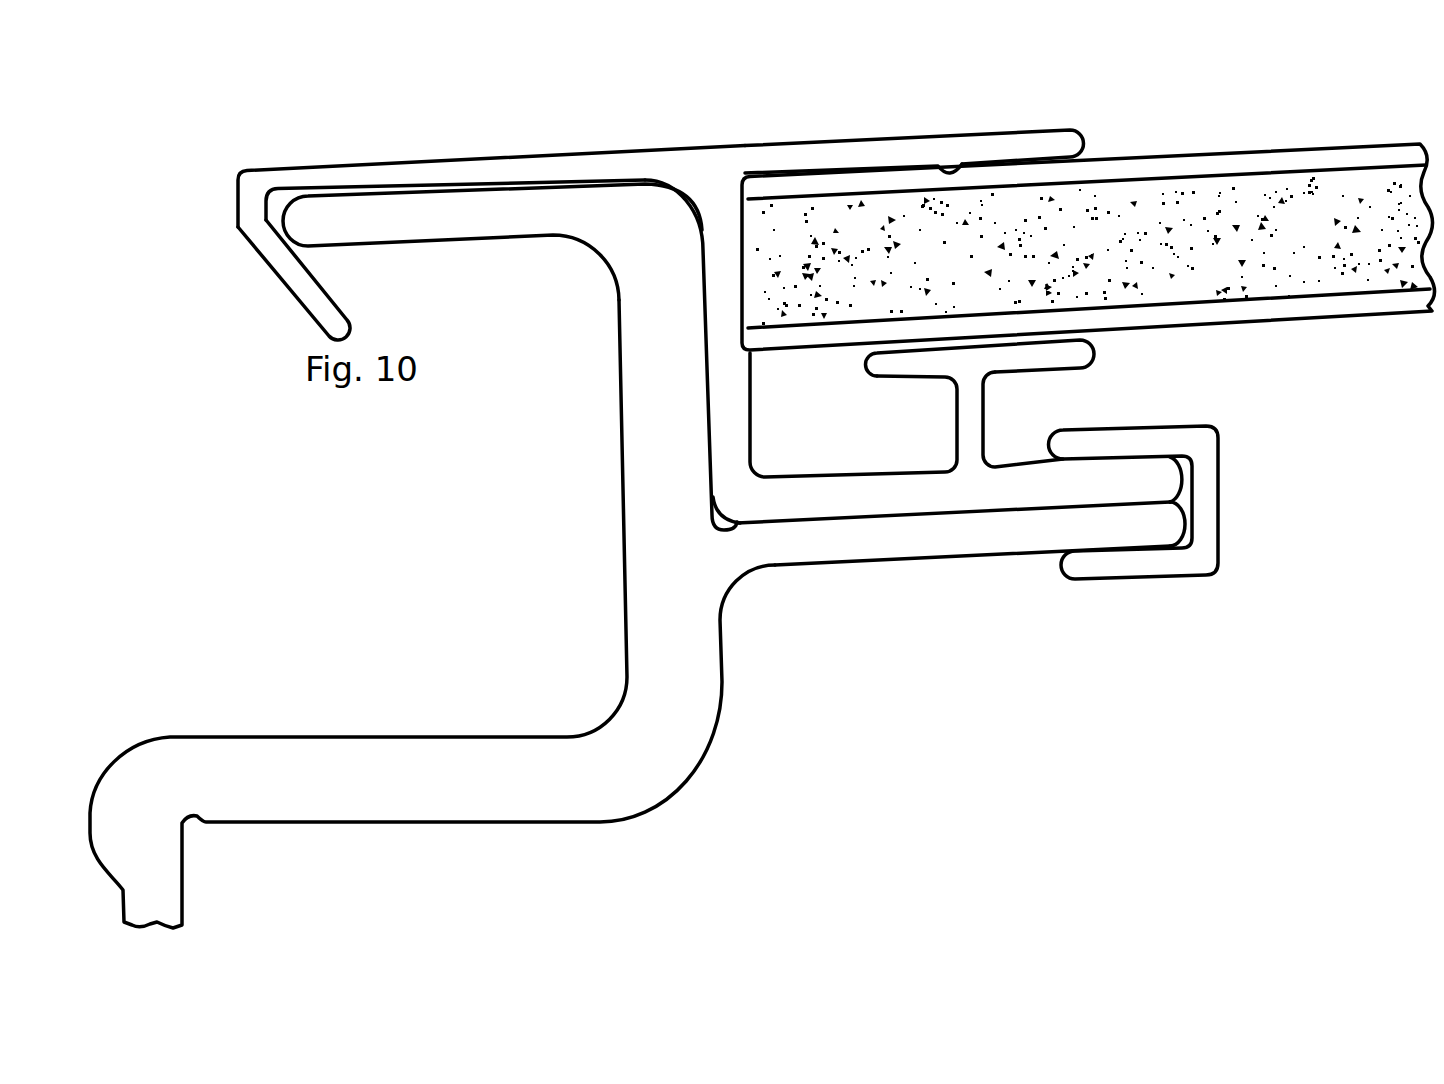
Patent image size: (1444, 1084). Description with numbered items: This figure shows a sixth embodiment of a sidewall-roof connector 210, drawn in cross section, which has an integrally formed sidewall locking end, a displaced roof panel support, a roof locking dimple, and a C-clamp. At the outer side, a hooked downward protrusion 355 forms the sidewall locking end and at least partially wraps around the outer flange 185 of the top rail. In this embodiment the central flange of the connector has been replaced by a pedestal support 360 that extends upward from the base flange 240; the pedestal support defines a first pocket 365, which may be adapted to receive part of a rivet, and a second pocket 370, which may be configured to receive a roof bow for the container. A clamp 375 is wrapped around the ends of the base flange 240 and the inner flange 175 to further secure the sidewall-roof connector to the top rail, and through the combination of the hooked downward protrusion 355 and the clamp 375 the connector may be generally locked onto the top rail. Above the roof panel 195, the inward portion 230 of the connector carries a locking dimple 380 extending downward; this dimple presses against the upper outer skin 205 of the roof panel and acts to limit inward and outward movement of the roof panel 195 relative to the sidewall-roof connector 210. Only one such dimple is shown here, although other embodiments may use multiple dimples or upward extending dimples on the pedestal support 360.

The sidewall-roof connector 210 is at (530, 146).
The inward portion 230 is at (857, 152).
The locking dimple 380 is at (951, 167).
The upper outer skin 205 is at (1135, 168).
The hooked downward protrusion 355 is at (285, 255).
The outer flange 185 is at (417, 225).
The first pocket 365 is at (810, 431).
The pedestal support 360 is at (953, 365).
The second pocket 370 is at (1024, 412).
The roof panel 195 is at (1280, 278).
The clamp 375 is at (1200, 493).
The inner flange 175 is at (880, 545).
The base flange 240 is at (968, 489).